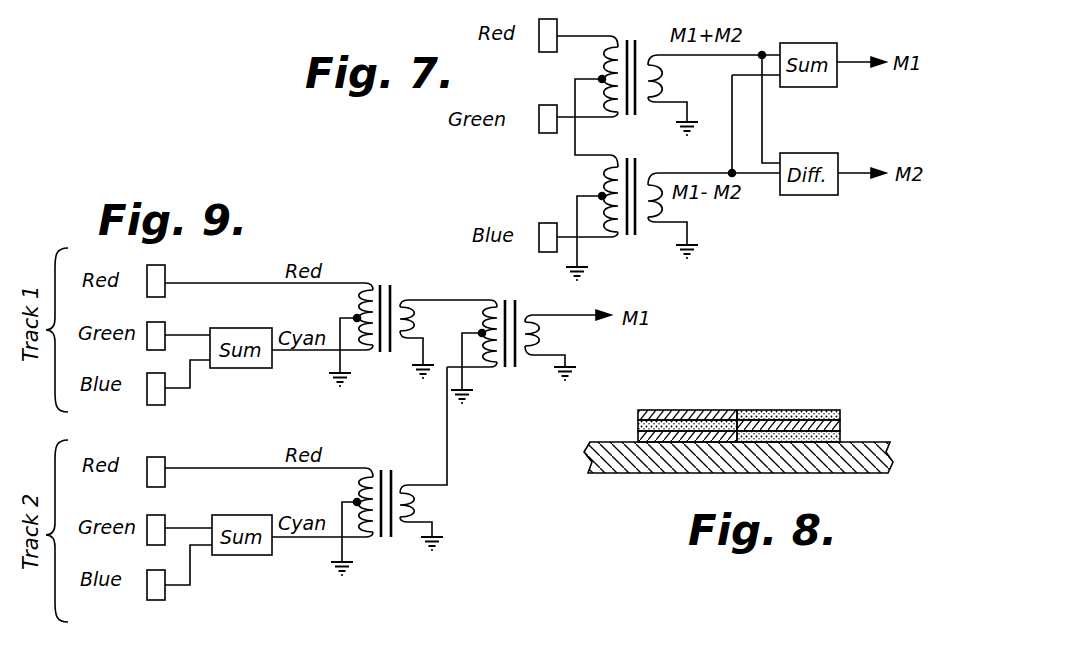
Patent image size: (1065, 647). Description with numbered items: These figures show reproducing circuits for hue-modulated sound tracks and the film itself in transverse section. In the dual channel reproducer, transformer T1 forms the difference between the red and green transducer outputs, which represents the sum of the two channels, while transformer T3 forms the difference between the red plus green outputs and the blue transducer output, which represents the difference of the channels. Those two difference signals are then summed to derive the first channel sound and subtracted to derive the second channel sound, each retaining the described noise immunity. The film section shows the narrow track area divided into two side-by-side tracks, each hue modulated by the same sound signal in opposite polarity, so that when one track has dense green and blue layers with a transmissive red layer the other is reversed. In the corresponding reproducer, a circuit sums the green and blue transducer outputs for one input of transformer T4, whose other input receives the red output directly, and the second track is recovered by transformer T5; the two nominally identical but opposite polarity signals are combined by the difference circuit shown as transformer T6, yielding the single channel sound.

In FIG. 7, the transformer T1 is at (668, 88).
In FIG. 7, the transformer T3 is at (668, 207).
In FIG. 9, the transformer T4 is at (331, 322).
In FIG. 9, the transformer T5 is at (306, 471).
In FIG. 9, the transformer T6 is at (529, 340).